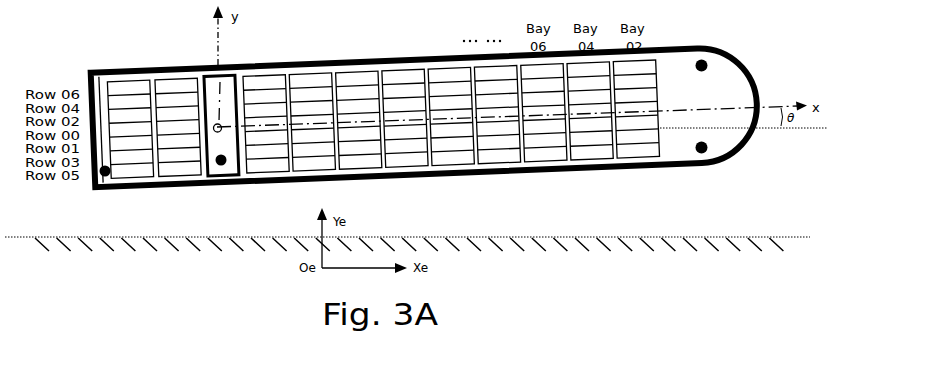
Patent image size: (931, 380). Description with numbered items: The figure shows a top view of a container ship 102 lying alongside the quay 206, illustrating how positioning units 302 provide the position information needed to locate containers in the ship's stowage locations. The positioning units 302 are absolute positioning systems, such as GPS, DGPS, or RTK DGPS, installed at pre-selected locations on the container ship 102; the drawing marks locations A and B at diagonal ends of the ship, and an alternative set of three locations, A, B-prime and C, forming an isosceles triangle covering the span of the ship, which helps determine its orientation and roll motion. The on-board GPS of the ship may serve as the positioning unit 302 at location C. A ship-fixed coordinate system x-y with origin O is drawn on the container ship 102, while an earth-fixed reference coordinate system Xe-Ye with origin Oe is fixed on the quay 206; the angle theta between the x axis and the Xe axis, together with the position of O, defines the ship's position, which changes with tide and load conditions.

The container ship 102 is at (743, 66).
The positioning unit 302 is at (700, 50).
The quay 206 is at (672, 238).